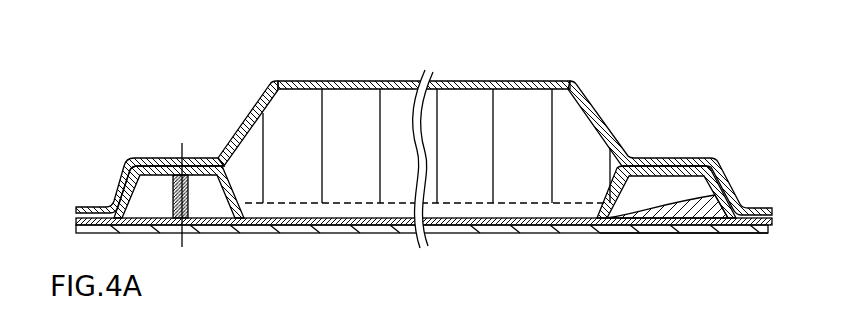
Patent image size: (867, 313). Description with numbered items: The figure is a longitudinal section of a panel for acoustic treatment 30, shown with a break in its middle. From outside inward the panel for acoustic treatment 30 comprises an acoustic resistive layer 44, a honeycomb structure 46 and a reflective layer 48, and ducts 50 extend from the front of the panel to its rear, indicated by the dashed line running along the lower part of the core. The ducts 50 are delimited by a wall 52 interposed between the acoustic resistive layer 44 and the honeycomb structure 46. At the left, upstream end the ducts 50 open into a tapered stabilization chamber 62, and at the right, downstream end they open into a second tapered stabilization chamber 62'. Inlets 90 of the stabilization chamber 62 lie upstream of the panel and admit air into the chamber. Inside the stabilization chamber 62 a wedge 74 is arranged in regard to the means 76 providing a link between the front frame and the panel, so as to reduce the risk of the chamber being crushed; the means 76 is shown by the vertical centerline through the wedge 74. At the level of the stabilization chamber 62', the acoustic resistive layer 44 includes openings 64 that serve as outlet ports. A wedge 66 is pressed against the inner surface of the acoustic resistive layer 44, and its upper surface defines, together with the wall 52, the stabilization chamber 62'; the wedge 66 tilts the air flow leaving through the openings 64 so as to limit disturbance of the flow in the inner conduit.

The panel for acoustic treatment 30 is at (498, 66).
The acoustic resistive layer 44 is at (390, 232).
The honeycomb structure 46 is at (320, 113).
The reflective layer 48 is at (345, 82).
The ducts 50 is at (538, 203).
The wall 52 is at (273, 227).
The stabilization chamber 62 is at (179, 157).
The stabilization chamber 62' is at (666, 142).
The openings 64 is at (707, 232).
The wedge 66 is at (707, 210).
The wedge 74 is at (190, 173).
The means providing a link 76 is at (182, 244).
The inlets 90 is at (120, 188).